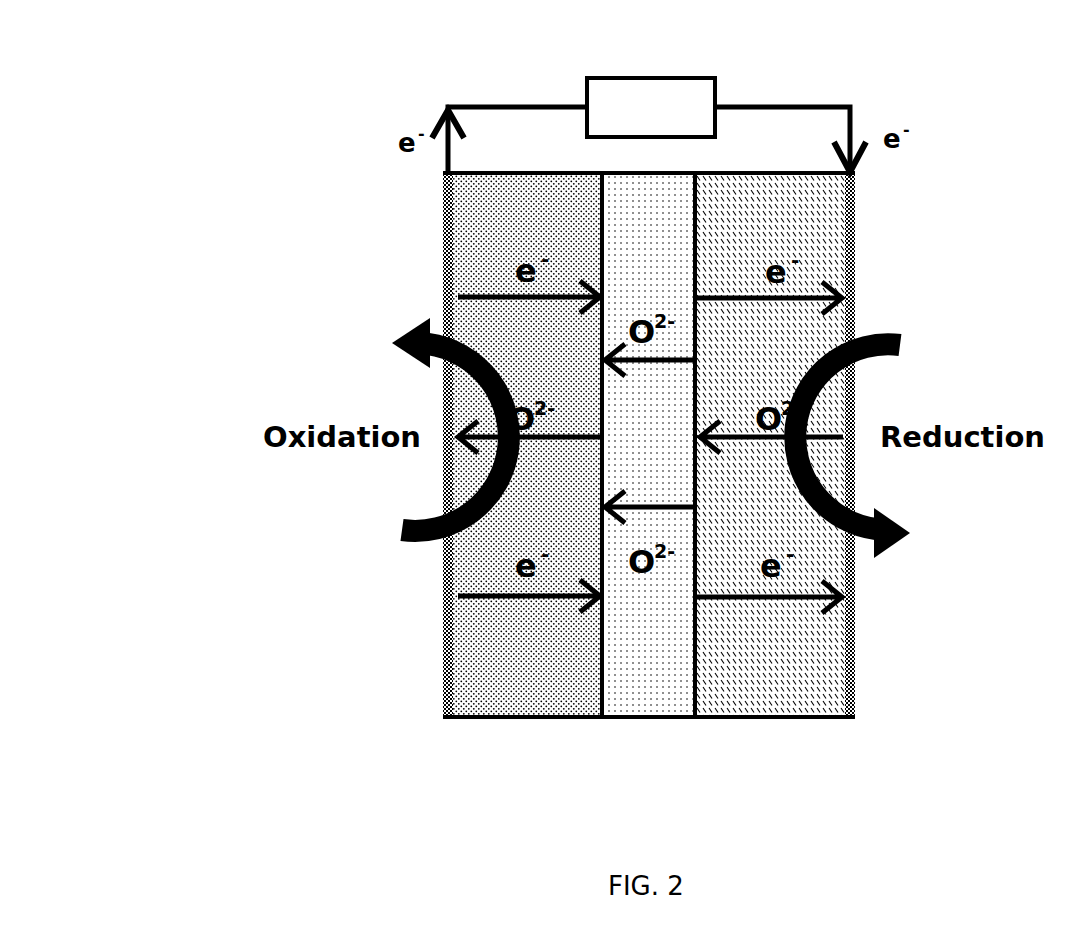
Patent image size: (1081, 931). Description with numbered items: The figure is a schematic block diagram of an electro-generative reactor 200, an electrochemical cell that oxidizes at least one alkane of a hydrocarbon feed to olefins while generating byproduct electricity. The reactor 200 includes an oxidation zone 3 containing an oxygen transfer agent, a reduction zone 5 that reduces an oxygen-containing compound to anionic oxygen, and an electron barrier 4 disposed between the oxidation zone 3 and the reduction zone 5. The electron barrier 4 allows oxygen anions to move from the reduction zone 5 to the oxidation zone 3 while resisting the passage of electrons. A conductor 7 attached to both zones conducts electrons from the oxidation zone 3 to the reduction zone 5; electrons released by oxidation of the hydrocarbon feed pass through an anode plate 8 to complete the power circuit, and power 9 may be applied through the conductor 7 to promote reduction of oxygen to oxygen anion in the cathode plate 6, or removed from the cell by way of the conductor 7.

The electro-generative reactor 200 is at (203, 98).
The oxidation zone 3 is at (487, 715).
The electron barrier 4 is at (645, 715).
The reduction zone 5 is at (775, 715).
The cathode plate 6 is at (855, 222).
The conductor 7 is at (523, 106).
The anode plate 8 is at (443, 225).
The power 9 is at (651, 107).